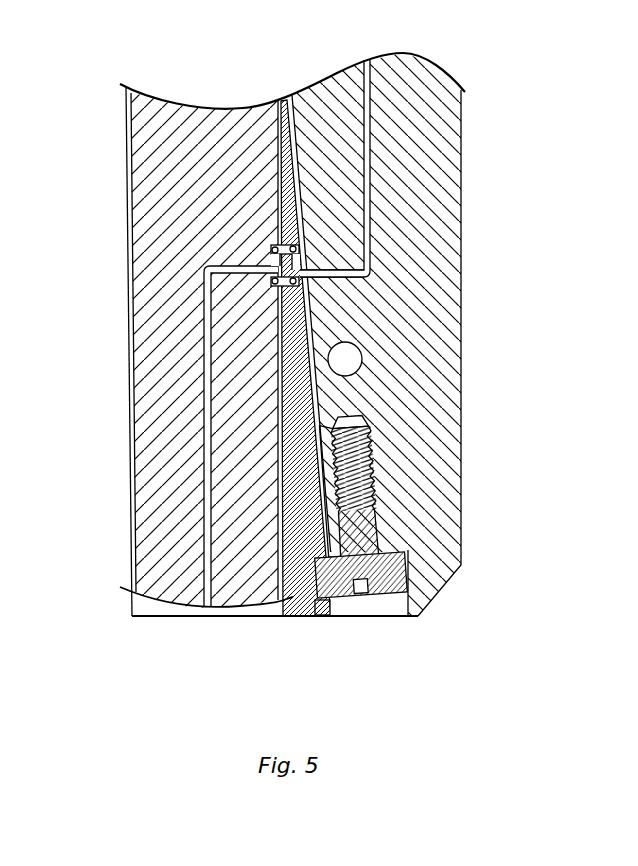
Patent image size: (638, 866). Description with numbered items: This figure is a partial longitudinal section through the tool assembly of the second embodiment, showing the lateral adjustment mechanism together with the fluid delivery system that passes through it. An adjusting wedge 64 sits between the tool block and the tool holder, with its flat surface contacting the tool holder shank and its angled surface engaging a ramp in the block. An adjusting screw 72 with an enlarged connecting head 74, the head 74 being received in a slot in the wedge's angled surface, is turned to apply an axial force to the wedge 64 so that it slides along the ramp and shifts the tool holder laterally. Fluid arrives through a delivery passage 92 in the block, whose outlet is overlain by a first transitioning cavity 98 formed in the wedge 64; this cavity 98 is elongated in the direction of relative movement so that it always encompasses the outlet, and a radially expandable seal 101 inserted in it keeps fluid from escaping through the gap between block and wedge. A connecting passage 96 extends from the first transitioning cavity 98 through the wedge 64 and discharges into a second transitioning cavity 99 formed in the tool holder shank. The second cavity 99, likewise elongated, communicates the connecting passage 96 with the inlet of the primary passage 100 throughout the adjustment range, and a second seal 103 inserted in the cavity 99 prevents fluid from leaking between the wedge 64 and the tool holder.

The adjusting wedge 64 is at (300, 604).
The adjusting screw 72 is at (368, 527).
The connecting head 74 is at (379, 594).
The delivery passage 92 is at (373, 193).
The connecting passage 96 is at (282, 230).
The first transitioning cavity 98 is at (306, 268).
The second transitioning cavity 99 is at (273, 253).
The primary passage 100 is at (204, 410).
The radially expandable seal 101 is at (320, 278).
The second seal 103 is at (268, 290).